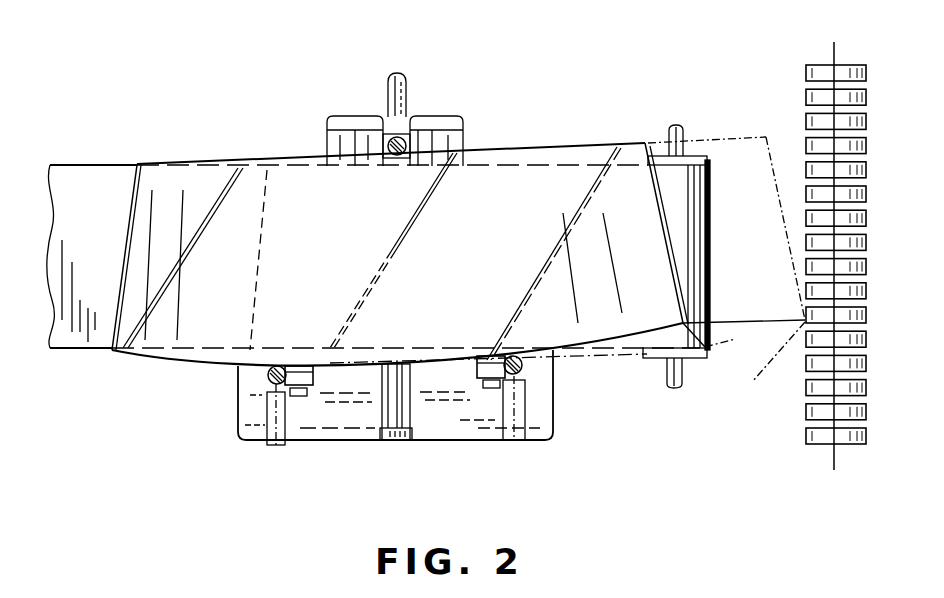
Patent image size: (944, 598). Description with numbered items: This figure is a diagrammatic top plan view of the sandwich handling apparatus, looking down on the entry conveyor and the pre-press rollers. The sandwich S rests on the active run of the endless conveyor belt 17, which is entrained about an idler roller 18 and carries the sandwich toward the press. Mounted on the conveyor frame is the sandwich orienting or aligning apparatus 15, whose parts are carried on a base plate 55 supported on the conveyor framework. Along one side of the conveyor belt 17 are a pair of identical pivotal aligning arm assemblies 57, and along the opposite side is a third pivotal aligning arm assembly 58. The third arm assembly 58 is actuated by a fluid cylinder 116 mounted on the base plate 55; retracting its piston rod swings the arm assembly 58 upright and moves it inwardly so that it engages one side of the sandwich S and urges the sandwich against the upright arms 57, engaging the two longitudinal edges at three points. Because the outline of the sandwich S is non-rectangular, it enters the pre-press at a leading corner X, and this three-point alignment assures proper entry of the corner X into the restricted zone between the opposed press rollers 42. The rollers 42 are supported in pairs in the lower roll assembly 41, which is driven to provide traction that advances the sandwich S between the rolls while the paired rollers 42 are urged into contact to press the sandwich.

The sandwich S is at (165, 185).
The sandwich orienting or aligning apparatus 15 is at (474, 124).
The third pivotal aligning arm assembly 58 is at (388, 96).
The idler roller 18 is at (693, 160).
The conveyor belt 17 is at (706, 238).
The base plate 55 is at (458, 432).
The pivotal aligning arm assemblies 57 is at (270, 380).
The fluid cylinder 116 is at (388, 425).
The rollers 42 is at (806, 120).
The lower roll assembly 41 is at (845, 450).
The corner X is at (705, 352).